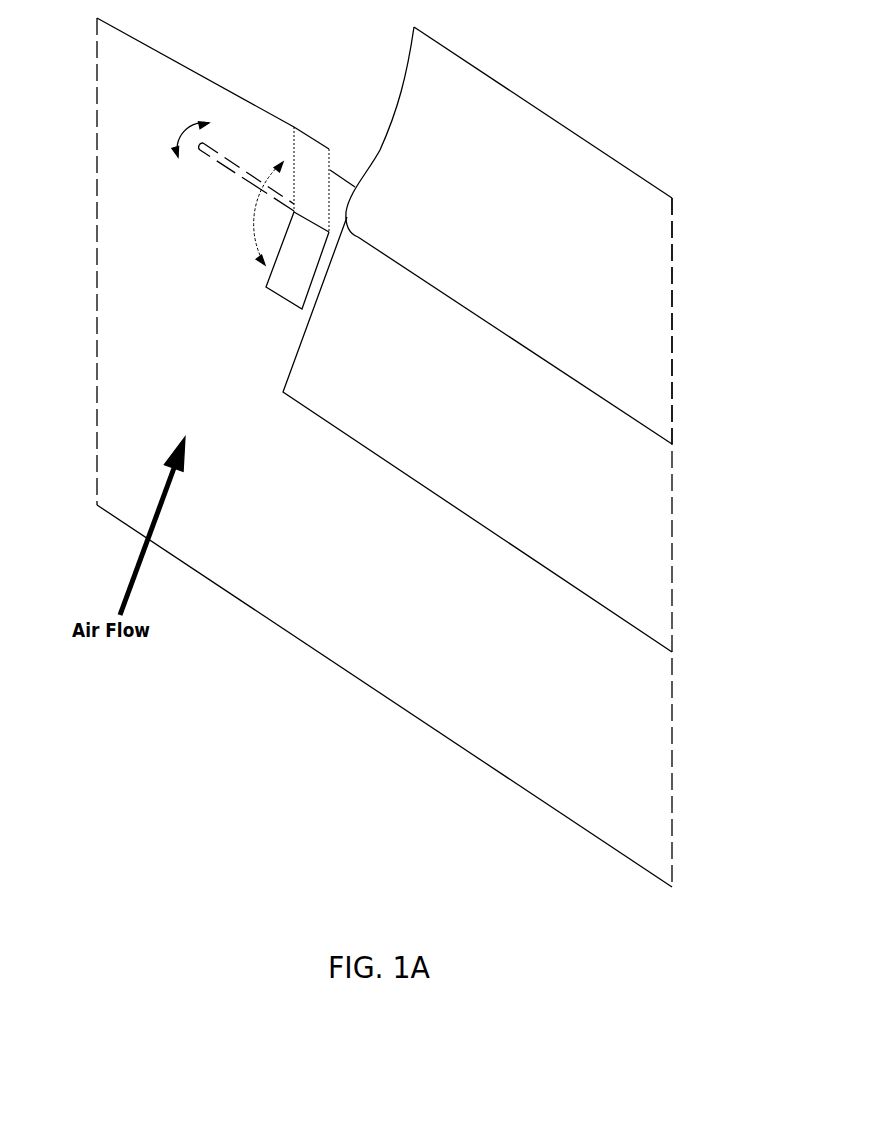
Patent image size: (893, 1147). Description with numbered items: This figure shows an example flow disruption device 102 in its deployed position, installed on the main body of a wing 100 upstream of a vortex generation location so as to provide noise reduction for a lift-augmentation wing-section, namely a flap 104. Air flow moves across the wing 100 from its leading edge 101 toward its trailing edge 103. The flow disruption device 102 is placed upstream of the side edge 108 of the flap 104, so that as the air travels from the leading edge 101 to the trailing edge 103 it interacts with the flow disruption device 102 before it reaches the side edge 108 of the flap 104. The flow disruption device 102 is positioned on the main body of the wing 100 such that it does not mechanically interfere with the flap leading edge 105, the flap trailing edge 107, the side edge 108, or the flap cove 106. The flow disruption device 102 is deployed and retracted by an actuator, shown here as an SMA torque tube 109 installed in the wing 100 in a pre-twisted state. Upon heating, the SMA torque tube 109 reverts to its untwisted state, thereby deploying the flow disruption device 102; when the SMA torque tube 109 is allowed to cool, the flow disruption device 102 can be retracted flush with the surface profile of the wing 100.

The wing 100 is at (640, 708).
The leading edge 101 is at (410, 712).
The flow disruption device 102 is at (298, 126).
The trailing edge 103 is at (161, 54).
The flap 104 is at (648, 267).
The flap leading edge 105 is at (455, 300).
The flap cove 106 is at (643, 530).
The flap trailing edge 107 is at (535, 105).
The side edge 108 is at (393, 120).
The SMA torque tube 109 is at (236, 171).